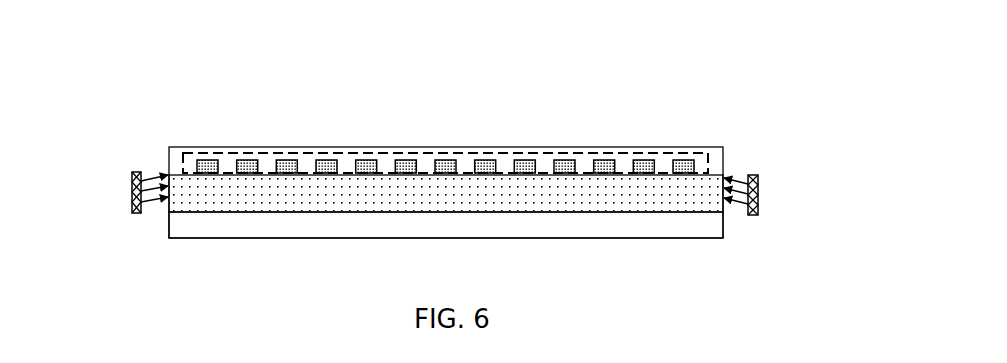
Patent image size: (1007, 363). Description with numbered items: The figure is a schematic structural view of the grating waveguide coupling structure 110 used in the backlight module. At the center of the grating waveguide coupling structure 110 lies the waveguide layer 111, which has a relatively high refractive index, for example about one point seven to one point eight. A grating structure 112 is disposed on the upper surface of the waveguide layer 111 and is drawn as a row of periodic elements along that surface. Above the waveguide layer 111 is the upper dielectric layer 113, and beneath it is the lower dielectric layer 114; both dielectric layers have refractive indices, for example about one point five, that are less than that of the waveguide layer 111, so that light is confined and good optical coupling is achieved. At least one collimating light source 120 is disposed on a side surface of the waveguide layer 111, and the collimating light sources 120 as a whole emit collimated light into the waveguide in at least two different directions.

The grating waveguide coupling structure 110 is at (427, 158).
The waveguide layer 111 is at (405, 192).
The grating structure 112 is at (404, 158).
The upper dielectric layer 113 is at (470, 153).
The lower dielectric layer 114 is at (333, 220).
The collimating light source 120 is at (753, 175).